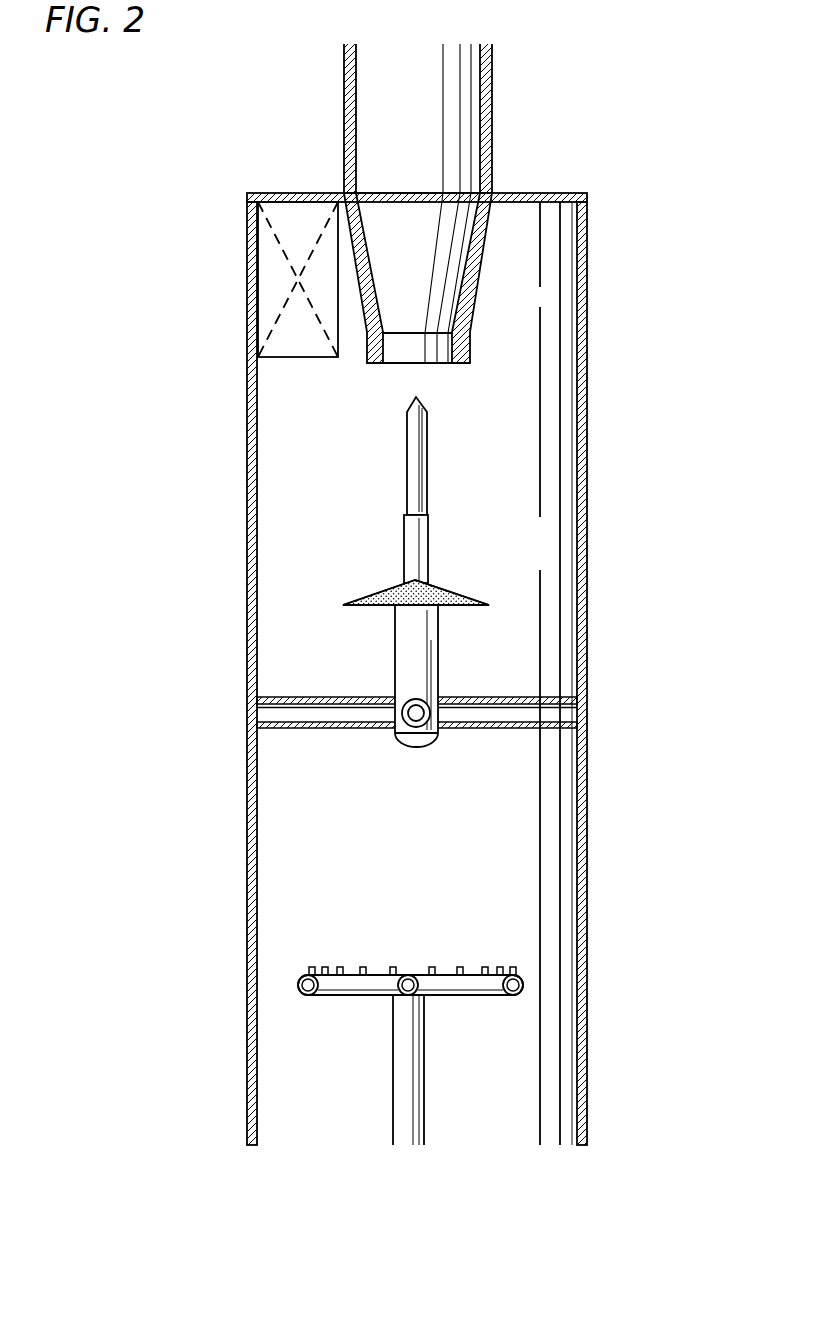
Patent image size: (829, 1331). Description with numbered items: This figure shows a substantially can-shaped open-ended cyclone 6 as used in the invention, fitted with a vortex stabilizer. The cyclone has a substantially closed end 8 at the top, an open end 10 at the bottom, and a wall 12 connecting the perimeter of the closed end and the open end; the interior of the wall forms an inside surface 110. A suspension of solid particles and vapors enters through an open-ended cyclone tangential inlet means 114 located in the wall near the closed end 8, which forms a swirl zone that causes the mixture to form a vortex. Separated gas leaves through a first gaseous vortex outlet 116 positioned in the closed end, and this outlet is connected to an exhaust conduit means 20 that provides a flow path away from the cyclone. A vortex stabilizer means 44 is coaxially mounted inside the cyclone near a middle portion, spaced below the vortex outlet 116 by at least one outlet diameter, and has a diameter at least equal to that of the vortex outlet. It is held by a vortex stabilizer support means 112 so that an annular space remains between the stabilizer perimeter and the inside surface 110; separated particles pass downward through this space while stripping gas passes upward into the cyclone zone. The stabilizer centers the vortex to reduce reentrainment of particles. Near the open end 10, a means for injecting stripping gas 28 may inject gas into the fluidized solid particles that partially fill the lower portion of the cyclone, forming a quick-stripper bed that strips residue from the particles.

The open-ended cyclone 6 is at (617, 493).
The closed end 8 is at (548, 193).
The open end 10 is at (497, 1148).
The wall 12 is at (587, 413).
The exhaust conduit means 20 is at (493, 81).
The means for injecting stripping gas 28 is at (480, 997).
The vortex stabilizer means 44 is at (456, 592).
The inside surface 110 is at (258, 862).
The vortex stabilizer support means 112 is at (570, 717).
The open-ended cyclone tangential inlet means 114 is at (270, 293).
The first gaseous vortex outlet 116 is at (405, 202).